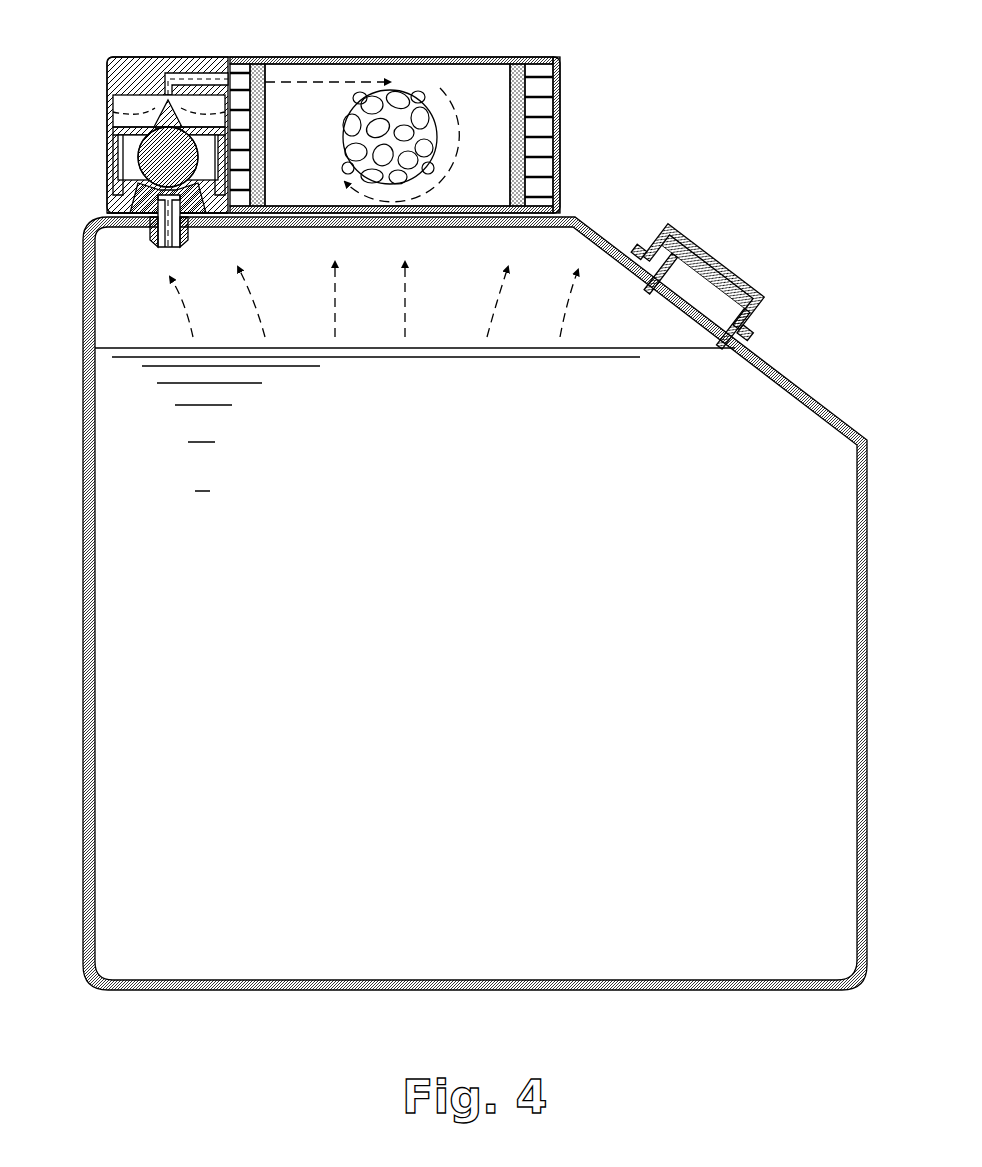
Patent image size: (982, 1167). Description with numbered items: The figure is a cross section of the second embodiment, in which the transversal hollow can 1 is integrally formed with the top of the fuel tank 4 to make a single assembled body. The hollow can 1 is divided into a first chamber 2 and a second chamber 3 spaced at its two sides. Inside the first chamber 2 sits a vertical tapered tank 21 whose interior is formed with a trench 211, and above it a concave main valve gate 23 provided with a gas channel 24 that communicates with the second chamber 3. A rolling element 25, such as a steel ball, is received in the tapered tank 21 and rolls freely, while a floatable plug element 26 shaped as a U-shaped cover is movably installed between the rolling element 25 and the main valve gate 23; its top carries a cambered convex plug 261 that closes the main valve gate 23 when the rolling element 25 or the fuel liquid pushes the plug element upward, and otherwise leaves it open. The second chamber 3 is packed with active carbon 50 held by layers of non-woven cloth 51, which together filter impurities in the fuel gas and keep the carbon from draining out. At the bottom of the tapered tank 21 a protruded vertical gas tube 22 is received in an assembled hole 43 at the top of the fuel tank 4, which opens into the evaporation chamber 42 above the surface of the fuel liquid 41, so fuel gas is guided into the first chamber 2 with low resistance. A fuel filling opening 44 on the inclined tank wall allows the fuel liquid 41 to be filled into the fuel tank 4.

The transversal hollow can 1 is at (562, 77).
The first chamber 2 is at (118, 73).
The second chamber 3 is at (443, 78).
The fuel tank 4 is at (813, 397).
The tapered tank 21 is at (108, 215).
The gas tube 22 is at (163, 243).
The main valve gate 23 is at (182, 90).
The gas channel 24 is at (218, 78).
The rolling element 25 is at (138, 150).
The floatable plug element 26 is at (140, 100).
The fuel liquid 41 is at (163, 348).
The evaporation chamber 42 is at (568, 247).
The assembled hole 43 is at (158, 228).
The fuel filling opening 44 is at (690, 290).
The active carbon 50 is at (402, 90).
The non-woven cloth 51 is at (513, 75).
The trench 211 is at (128, 178).
The plug 261 is at (166, 95).